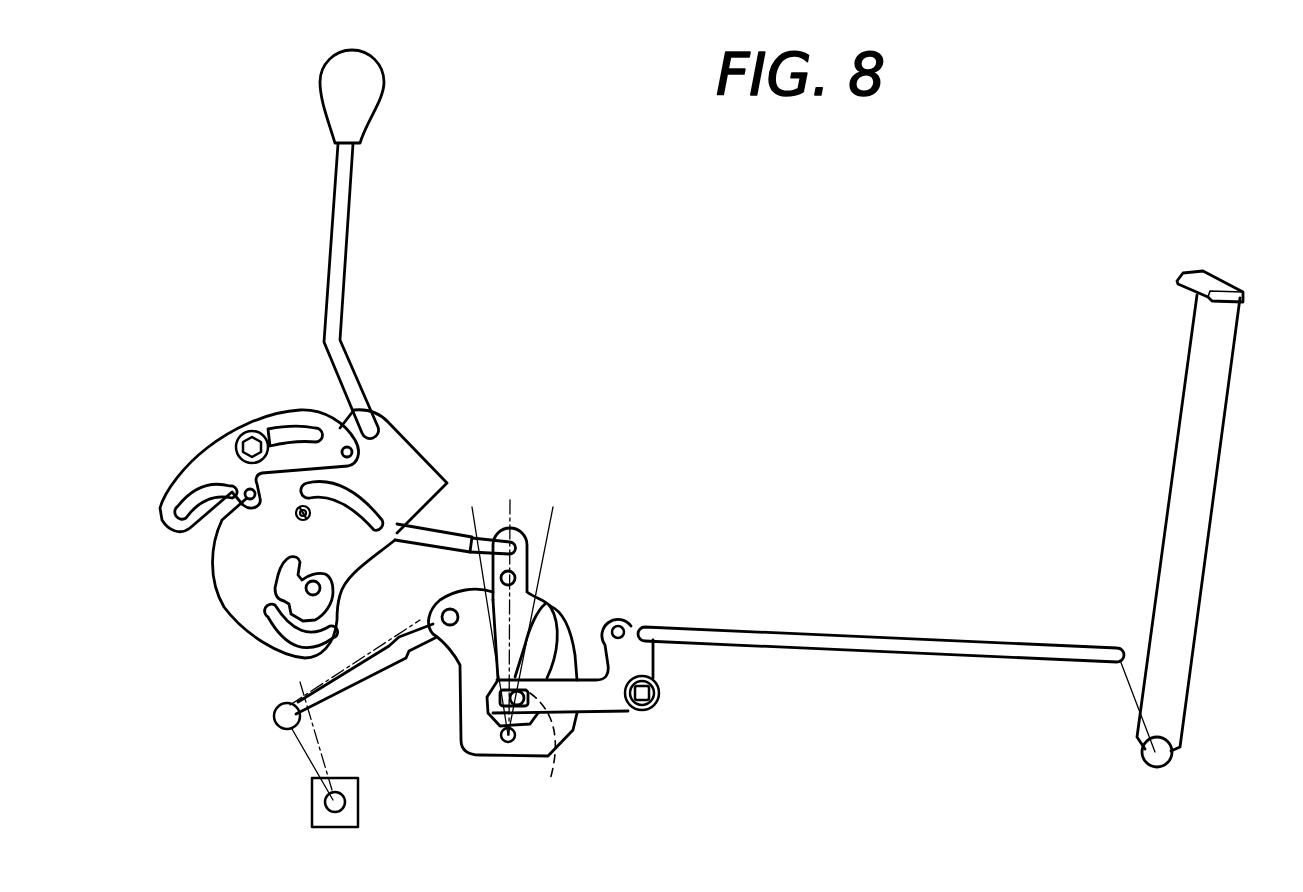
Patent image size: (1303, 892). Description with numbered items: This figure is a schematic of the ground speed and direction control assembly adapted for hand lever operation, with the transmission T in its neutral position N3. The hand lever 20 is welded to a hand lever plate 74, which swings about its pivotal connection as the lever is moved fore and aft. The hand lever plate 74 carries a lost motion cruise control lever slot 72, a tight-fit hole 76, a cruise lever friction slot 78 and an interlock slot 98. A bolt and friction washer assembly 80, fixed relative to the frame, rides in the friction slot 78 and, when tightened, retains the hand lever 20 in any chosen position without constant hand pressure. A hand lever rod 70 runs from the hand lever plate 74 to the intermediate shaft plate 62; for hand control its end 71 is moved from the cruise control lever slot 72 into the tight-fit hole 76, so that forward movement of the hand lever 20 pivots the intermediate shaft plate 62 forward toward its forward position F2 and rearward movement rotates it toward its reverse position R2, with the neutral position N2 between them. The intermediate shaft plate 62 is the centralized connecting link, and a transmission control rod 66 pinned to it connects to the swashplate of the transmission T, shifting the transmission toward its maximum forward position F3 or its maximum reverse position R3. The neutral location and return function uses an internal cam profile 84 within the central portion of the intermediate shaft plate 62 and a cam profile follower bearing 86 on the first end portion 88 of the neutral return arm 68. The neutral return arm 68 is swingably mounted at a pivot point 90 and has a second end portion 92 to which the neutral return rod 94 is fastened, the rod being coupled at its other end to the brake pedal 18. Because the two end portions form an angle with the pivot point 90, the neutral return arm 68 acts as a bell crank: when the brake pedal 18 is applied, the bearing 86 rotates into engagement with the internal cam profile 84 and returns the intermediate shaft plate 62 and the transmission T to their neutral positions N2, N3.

The brake pedal 18 is at (1227, 412).
The hand lever 20 is at (350, 225).
The intermediate shaft plate 62 is at (462, 668).
The transmission control rod 66 is at (413, 655).
The neutral return arm 68 is at (596, 703).
The hand lever rod 70 is at (437, 548).
The end of hand lever rod 71 is at (297, 515).
The cruise control lever slot 72 is at (380, 493).
The hand lever plate 74 is at (352, 551).
The tight-fit hole 76 is at (298, 518).
The cruise lever friction slot 78 is at (212, 467).
The bolt and friction washer assembly 80 is at (253, 444).
The internal cam profile 84 is at (473, 737).
The cam profile follower bearing 86 is at (544, 750).
The first end portion 88 is at (557, 680).
The pivot point 90 is at (657, 702).
The second end portion 92 is at (632, 623).
The neutral return rod 94 is at (893, 637).
The interlock slot 98 is at (270, 618).
The transmission T is at (360, 803).
The reverse position of intermediate shaft plate R2 is at (472, 513).
The neutral position of intermediate shaft plate N2 is at (512, 514).
The forward position of intermediate shaft plate F2 is at (553, 517).
The neutral position of transmission N3 is at (290, 700).
The forward position of transmission F3 is at (335, 800).
The reverse position of transmission R3 is at (312, 776).